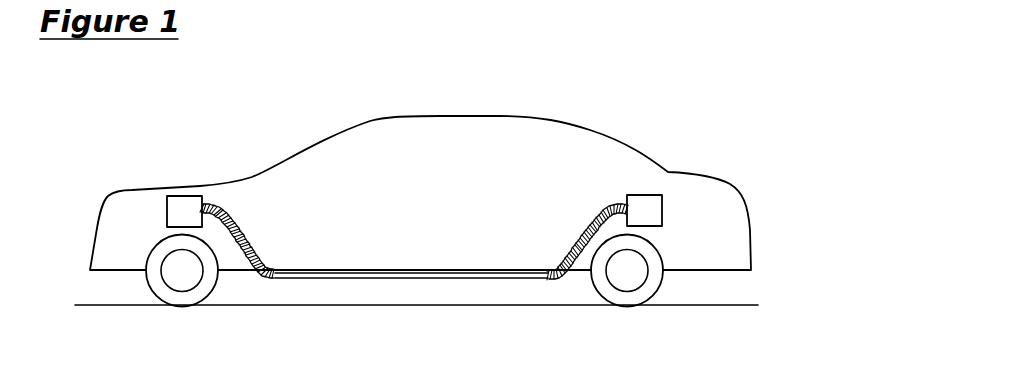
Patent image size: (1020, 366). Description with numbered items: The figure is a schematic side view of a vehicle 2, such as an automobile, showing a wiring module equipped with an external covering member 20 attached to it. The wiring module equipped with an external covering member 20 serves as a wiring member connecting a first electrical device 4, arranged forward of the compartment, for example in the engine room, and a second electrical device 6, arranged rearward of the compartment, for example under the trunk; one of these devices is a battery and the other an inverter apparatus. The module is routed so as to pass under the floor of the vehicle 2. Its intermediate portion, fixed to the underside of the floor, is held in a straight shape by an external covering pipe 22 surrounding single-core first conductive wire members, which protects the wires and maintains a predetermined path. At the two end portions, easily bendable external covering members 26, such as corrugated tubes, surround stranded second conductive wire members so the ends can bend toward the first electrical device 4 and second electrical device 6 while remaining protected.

The vehicle 2 is at (400, 116).
The first electrical device 4 is at (185, 196).
The second electrical device 6 is at (645, 194).
The wiring module equipped with an external covering member 20 is at (455, 282).
The external covering pipe 22 is at (382, 280).
The external covering member 26 is at (247, 243).